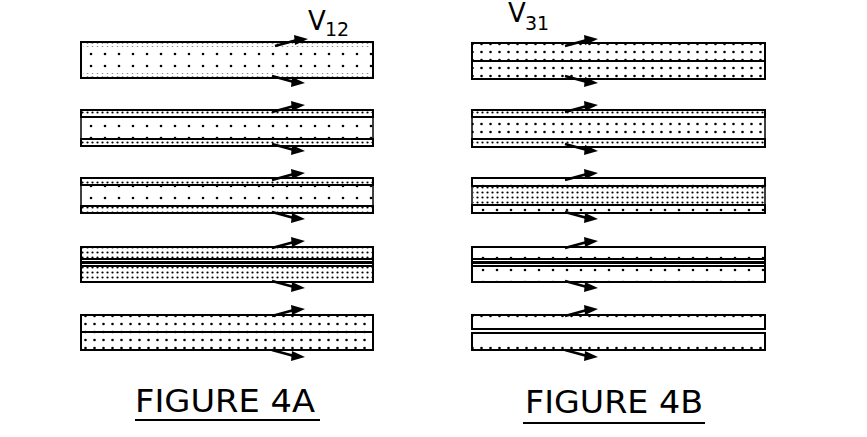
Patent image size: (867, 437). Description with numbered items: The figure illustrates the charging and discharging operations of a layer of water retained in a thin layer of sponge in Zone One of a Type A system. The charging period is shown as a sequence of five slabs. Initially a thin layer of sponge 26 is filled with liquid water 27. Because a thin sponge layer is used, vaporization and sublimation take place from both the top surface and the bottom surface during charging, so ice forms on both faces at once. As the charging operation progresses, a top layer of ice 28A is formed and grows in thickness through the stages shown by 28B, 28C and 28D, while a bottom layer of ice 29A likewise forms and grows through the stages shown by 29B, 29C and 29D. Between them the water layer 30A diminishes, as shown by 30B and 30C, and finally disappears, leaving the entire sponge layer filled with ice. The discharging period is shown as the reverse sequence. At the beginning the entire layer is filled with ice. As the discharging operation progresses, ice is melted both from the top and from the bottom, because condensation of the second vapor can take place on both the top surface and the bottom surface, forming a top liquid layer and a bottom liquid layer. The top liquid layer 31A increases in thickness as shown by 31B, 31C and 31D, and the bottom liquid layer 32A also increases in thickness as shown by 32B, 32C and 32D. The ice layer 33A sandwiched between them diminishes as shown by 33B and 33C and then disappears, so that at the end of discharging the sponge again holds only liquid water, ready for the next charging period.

In FIG. 4A, the thin layer of sponge 26 is at (120, 66).
In FIG. 4A, the liquid water 27 is at (196, 75).
In FIG. 4A, the top layer of ice 28A is at (369, 113).
In FIG. 4A, the water layer 30A is at (355, 133).
In FIG. 4A, the bottom layer of ice 29A is at (362, 145).
In FIG. 4A, the top layer of ice 28B is at (95, 183).
In FIG. 4A, the water layer 30B is at (102, 200).
In FIG. 4A, the bottom layer of ice 29B is at (90, 209).
In FIG. 4A, the top layer of ice 28C is at (84, 251).
In FIG. 4A, the water layer 30C is at (100, 267).
In FIG. 4A, the bottom layer of ice 29C is at (96, 279).
In FIG. 4A, the top layer of ice 28D is at (353, 323).
In FIG. 4B, the top layer of ice 28D is at (505, 53).
In FIG. 4A, the bottom layer of ice 29D is at (362, 342).
In FIG. 4B, the bottom layer of ice 29D is at (500, 71).
In FIG. 4B, the top liquid layer 31A is at (752, 115).
In FIG. 4B, the ice layer 33A is at (740, 133).
In FIG. 4B, the bottom liquid layer 32A is at (742, 145).
In FIG. 4B, the top liquid layer 31B is at (480, 183).
In FIG. 4B, the ice layer 33B is at (492, 200).
In FIG. 4B, the bottom liquid layer 32B is at (482, 213).
In FIG. 4B, the top liquid layer 31C is at (735, 253).
In FIG. 4B, the ice layer 33C is at (755, 263).
In FIG. 4B, the bottom liquid layer 32C is at (735, 273).
In FIG. 4B, the top liquid layer 31D is at (495, 323).
In FIG. 4B, the bottom liquid layer 32D is at (495, 343).